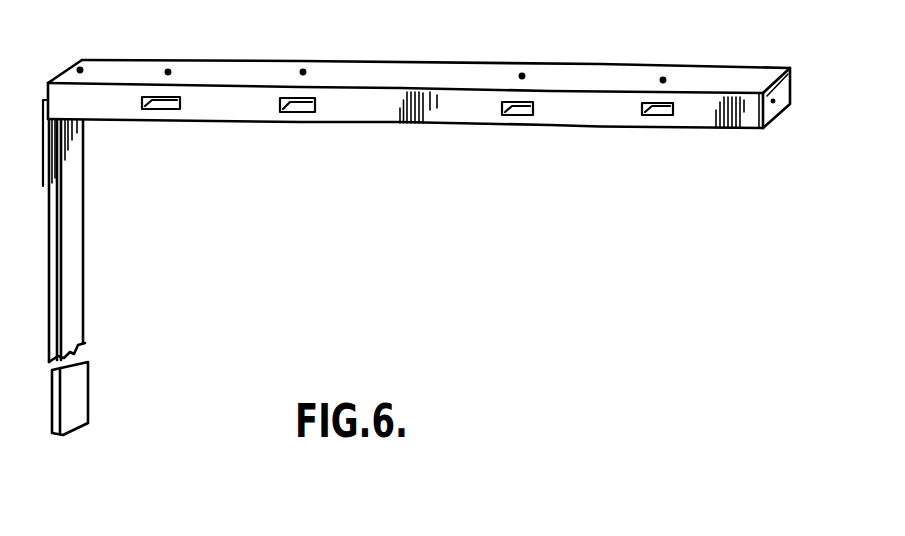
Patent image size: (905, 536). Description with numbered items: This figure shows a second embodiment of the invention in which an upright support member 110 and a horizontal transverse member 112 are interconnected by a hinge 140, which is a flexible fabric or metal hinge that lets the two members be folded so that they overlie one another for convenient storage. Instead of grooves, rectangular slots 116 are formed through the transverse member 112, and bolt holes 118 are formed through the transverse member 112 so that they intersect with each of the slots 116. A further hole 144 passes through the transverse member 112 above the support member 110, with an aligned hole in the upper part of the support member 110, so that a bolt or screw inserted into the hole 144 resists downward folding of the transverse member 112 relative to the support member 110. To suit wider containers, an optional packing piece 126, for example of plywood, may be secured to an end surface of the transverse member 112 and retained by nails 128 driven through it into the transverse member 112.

The support member 110 is at (86, 265).
The transverse member 112 is at (378, 60).
The rectangular slots 116 is at (181, 97).
The bolt holes 118 is at (168, 70).
The packing pieces 126 is at (789, 67).
The nails 128 is at (782, 93).
The hinge 140 is at (43, 136).
The further hole 144 is at (82, 67).